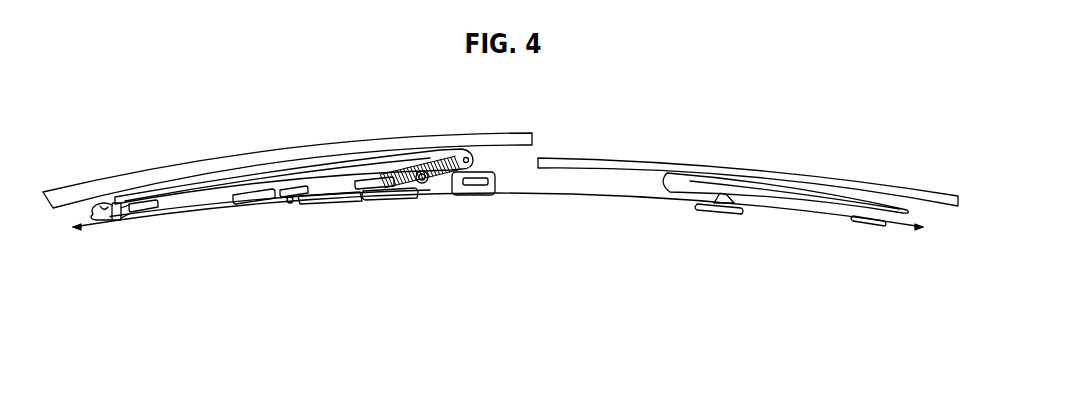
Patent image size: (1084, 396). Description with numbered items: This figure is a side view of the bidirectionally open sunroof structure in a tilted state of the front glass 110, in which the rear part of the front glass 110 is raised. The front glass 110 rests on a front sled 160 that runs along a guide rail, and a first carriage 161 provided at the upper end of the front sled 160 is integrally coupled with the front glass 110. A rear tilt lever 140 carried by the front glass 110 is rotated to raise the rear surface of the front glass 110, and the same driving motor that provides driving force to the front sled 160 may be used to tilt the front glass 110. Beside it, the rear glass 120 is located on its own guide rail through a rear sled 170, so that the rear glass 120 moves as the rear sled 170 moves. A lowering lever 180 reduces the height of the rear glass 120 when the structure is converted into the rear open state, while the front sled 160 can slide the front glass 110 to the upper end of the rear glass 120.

The front glass 110 is at (311, 149).
The rear glass 120 is at (702, 167).
The rear tilt lever 140 is at (446, 178).
The front sled 160 is at (242, 205).
The first carriage 161 is at (268, 162).
The rear sled 170 is at (862, 222).
The lowering lever 180 is at (768, 208).